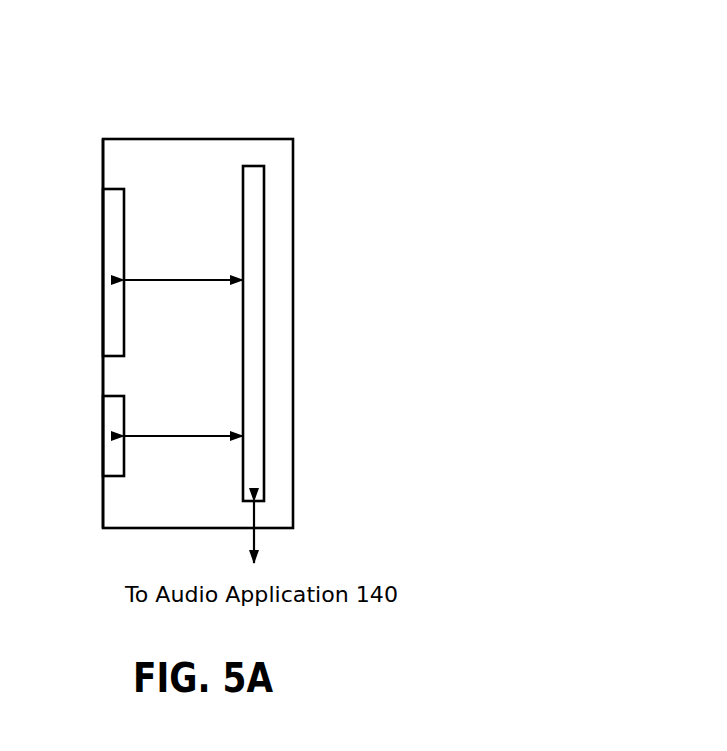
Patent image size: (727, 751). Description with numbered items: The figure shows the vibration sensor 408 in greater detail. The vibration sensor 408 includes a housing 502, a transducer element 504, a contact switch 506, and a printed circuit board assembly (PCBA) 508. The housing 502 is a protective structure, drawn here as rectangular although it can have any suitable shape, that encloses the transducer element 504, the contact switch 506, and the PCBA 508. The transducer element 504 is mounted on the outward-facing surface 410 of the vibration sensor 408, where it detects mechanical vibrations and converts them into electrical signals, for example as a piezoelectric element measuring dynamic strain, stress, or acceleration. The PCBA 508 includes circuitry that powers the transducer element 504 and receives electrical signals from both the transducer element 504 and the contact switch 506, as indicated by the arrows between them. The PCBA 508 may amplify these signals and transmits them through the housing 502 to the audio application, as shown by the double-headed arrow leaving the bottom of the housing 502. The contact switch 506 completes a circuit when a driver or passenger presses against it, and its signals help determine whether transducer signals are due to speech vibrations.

The vibration sensor 408 is at (264, 44).
The outward-facing surface 410 is at (103, 167).
The housing 502 is at (258, 139).
The transducer element 504 is at (103, 252).
The contact switch 506 is at (103, 434).
The printed circuit board assembly (PCBA) 508 is at (264, 246).